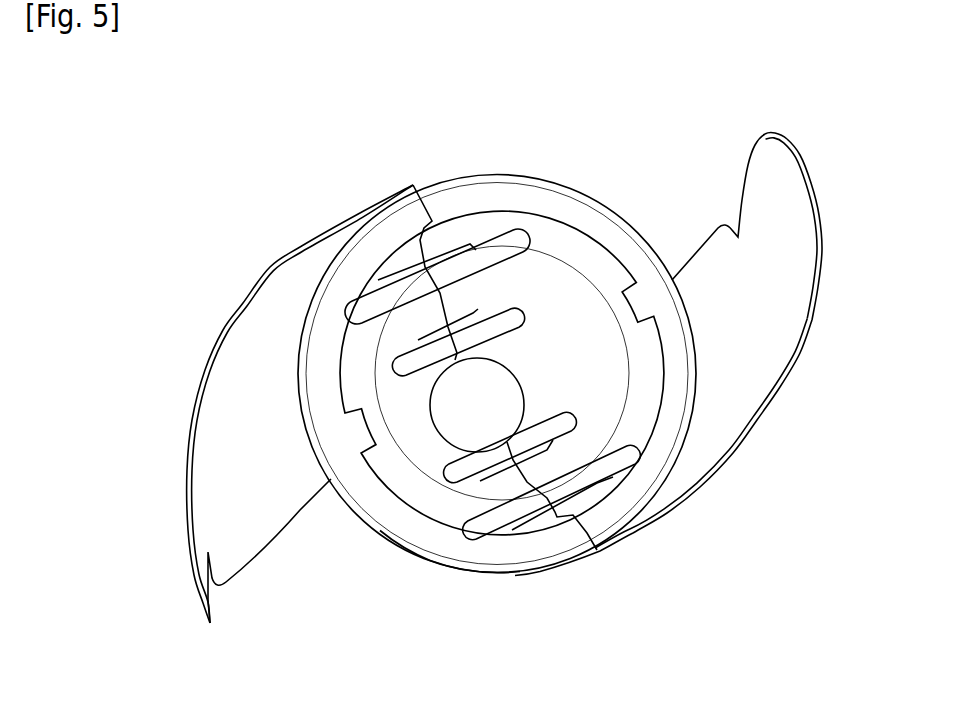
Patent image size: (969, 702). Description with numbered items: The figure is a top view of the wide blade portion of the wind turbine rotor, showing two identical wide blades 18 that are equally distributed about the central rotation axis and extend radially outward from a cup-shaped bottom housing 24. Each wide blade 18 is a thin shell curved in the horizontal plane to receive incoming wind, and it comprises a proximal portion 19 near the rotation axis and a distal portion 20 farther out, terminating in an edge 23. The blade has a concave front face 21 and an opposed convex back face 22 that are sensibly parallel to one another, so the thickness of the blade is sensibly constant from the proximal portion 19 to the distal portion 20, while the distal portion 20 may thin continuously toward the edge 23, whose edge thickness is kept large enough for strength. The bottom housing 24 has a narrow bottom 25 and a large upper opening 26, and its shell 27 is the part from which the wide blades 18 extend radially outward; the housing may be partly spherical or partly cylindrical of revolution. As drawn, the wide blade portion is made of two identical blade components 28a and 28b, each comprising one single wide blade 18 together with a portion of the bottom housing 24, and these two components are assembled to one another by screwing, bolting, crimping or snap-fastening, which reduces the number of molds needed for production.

The wide blade 18 is at (180, 473).
The proximal portion 19 is at (598, 553).
The distal portion 20 is at (807, 163).
The concave front face 21 is at (715, 252).
The convex back face 22 is at (754, 438).
The edge 23 is at (773, 133).
The bottom housing 24 is at (471, 553).
The bottom 25 is at (535, 180).
The upper opening 26 is at (573, 310).
The shell 27 is at (382, 508).
The blade component 28a is at (479, 172).
The blade component 28b is at (413, 570).